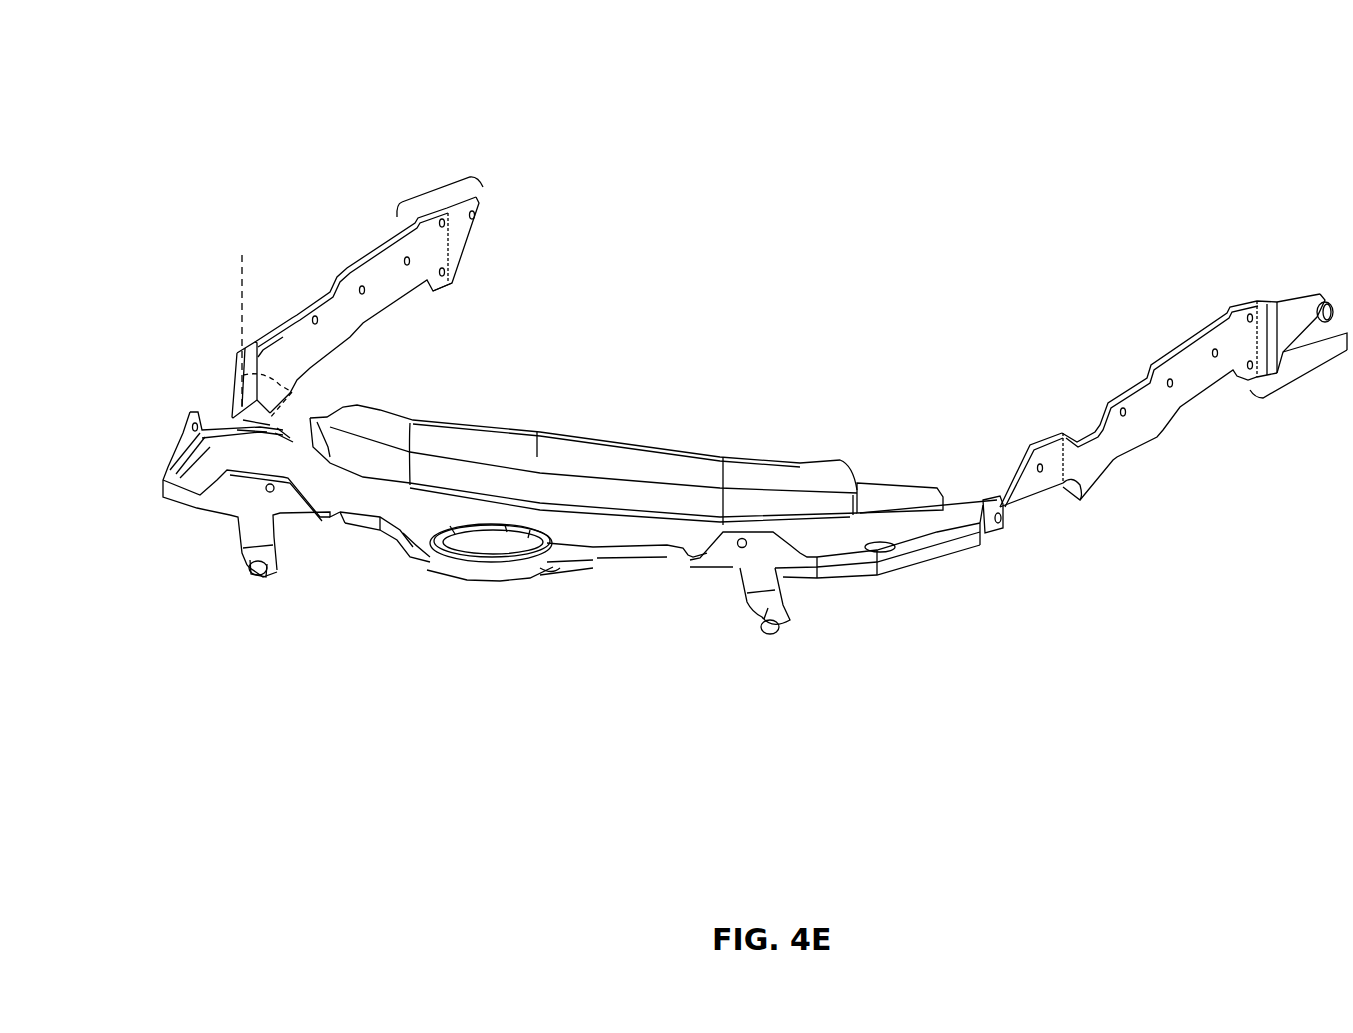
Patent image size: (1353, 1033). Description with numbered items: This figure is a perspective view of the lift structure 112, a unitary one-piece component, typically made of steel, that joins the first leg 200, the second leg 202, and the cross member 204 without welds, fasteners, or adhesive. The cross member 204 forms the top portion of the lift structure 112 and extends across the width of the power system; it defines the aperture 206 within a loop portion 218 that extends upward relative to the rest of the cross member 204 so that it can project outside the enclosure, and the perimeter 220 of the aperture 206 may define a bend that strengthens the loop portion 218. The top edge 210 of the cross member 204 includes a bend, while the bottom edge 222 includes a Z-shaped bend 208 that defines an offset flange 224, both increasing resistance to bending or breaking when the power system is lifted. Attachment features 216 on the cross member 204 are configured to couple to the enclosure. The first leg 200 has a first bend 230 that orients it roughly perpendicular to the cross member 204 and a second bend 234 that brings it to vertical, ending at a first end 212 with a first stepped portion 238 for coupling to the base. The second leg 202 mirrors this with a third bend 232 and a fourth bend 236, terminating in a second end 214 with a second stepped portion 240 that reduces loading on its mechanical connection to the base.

The lift structure 112 is at (205, 52).
The first leg 200 is at (1153, 423).
The second leg 202 is at (340, 300).
The cross member 204 is at (577, 527).
The aperture 206 is at (490, 548).
The Z-shaped bend 208 is at (537, 457).
The top edge 210 is at (370, 523).
The first end 212 is at (1283, 285).
The second end 214 is at (462, 248).
The attachment features 216 is at (243, 573).
The loop portion 218 is at (427, 563).
The perimeter 220 is at (540, 570).
The bottom edge 222 is at (863, 488).
The offset flange 224 is at (673, 445).
The first bend 230 is at (1013, 513).
The third bend 232 is at (218, 423).
The second bend 234 is at (1078, 497).
The fourth bend 236 is at (253, 342).
The first stepped portion 238 is at (1303, 380).
The second stepped portion 240 is at (437, 190).